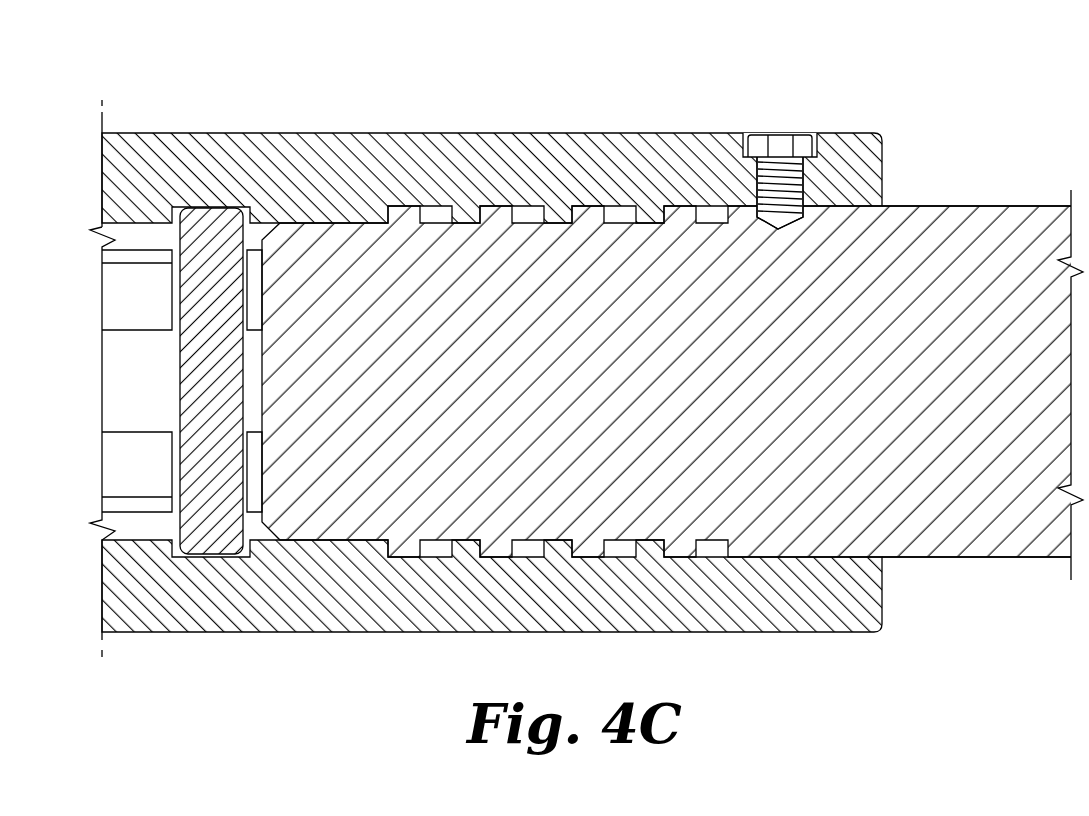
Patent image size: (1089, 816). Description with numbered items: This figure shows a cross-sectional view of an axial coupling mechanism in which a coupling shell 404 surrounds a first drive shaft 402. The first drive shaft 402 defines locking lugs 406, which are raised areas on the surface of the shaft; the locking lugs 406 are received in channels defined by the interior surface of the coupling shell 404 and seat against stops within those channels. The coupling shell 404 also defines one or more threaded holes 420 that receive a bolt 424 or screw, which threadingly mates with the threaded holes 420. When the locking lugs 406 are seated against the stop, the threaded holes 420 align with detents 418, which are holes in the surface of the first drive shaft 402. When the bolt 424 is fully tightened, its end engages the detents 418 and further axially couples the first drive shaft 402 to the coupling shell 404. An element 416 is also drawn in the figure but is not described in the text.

The first drive shaft 402 is at (998, 203).
The coupling shell 404 is at (268, 130).
The locking lugs 406 is at (582, 205).
The resilient pad 416 is at (208, 532).
The detents 418 is at (790, 232).
The threaded holes 420 is at (755, 184).
The bolt 424 is at (779, 147).